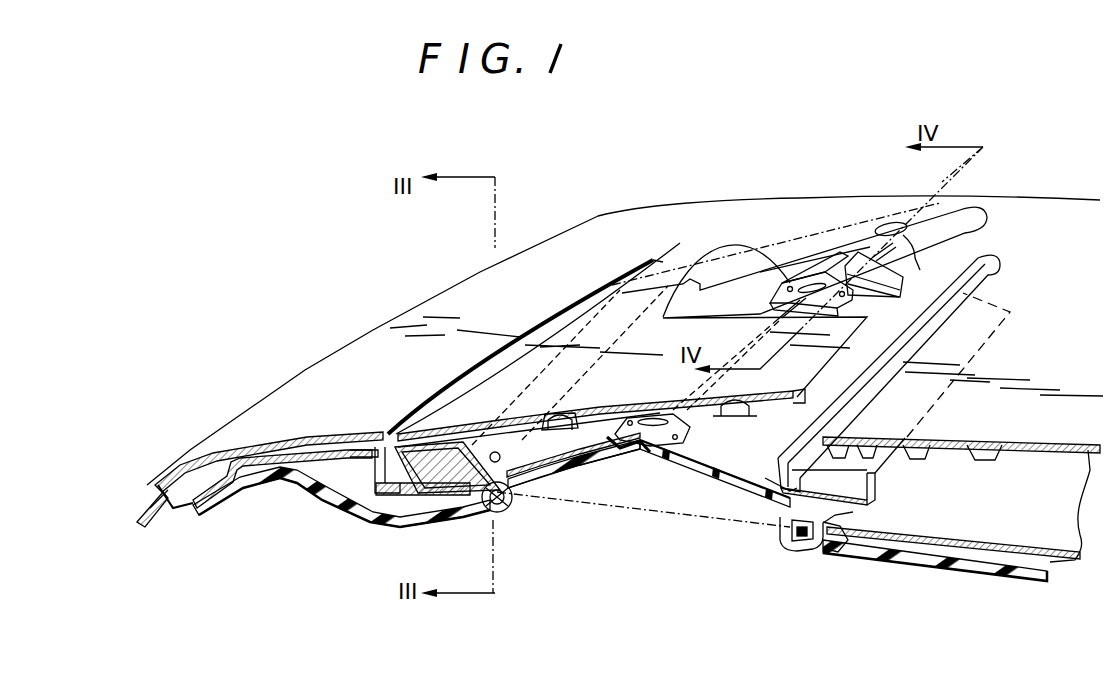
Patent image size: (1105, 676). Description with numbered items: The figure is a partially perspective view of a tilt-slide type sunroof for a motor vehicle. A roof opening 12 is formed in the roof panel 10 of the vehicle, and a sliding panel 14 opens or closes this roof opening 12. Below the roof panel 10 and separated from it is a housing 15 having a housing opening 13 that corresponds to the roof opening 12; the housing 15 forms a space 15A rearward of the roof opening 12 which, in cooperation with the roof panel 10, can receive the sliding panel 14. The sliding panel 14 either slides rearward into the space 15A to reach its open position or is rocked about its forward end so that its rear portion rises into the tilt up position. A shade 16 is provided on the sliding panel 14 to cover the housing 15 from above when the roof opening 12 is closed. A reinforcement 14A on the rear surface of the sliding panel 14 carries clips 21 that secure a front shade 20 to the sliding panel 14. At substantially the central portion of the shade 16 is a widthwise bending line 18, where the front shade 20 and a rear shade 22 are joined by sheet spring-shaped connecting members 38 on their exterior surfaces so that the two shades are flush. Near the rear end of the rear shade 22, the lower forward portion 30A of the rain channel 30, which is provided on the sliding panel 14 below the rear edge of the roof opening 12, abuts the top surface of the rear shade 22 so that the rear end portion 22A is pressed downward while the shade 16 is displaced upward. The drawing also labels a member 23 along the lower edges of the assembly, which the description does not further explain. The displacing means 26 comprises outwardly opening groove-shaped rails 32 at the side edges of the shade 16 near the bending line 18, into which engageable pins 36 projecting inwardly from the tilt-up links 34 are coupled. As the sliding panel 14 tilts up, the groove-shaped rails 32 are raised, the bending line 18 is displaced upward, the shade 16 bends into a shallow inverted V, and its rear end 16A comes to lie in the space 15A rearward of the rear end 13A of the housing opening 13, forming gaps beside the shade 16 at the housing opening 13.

The roof panel 10 is at (440, 313).
The roof opening 12 is at (985, 245).
The housing opening 13 is at (662, 488).
The rear end of the housing opening 13A is at (777, 537).
The sliding panel 14 is at (587, 335).
The reinforcement 14A is at (400, 517).
The housing 15 is at (447, 513).
The space 15A is at (1000, 487).
The shade 16 is at (692, 472).
The rear end of the shade 16A is at (835, 515).
The bending line 18 is at (822, 275).
The front shade 20 is at (560, 478).
The clips 21 is at (495, 440).
The rear shade 22 is at (743, 487).
The rear end portion of the rear shade 22A is at (787, 503).
The seal 23 is at (323, 500).
The displacing means 26 is at (845, 196).
The rain channel 30 is at (890, 473).
The lower forward portion of the rain channel 30A is at (777, 490).
The groove-shaped rails 32 is at (827, 275).
The links 34 is at (887, 223).
The engageable pins 36 is at (848, 257).
The connecting members 38 is at (788, 283).